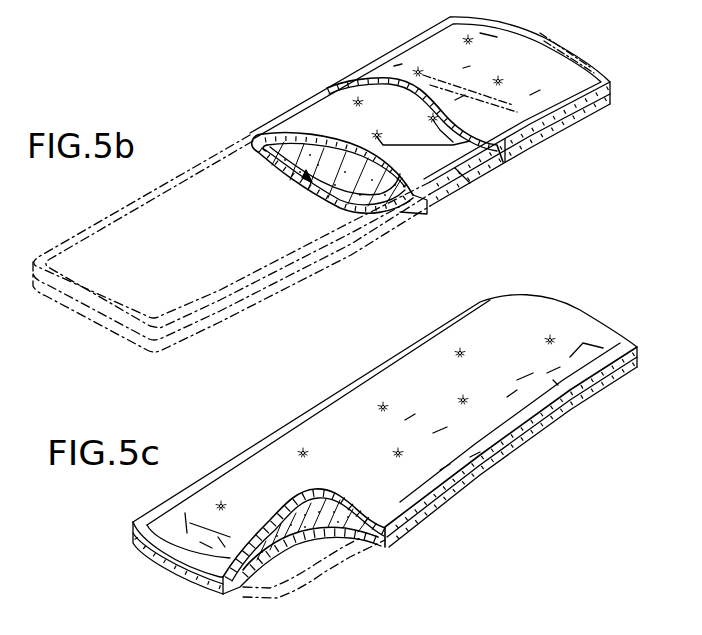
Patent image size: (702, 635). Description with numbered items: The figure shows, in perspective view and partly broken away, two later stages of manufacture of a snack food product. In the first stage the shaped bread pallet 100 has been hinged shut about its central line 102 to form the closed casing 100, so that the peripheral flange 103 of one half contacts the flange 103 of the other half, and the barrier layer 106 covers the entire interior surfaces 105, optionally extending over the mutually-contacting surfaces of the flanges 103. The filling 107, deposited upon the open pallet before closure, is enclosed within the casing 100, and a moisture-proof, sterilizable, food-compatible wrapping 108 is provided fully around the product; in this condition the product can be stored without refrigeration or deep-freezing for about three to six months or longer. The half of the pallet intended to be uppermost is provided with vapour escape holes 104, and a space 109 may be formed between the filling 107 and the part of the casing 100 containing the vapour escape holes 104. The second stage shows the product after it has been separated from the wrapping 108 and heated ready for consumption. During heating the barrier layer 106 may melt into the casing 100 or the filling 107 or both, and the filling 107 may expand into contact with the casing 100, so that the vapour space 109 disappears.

In FIG. 5b, the shaped bread pallet 100 is at (318, 86).
In FIG. 5c, the shaped bread pallet 100 is at (408, 341).
In FIG. 5b, the central line 102 is at (250, 140).
In FIG. 5b, the peripheral flange 103 is at (462, 175).
In FIG. 5b, the vapour escape holes 104 is at (473, 130).
In FIG. 5c, the vapour escape holes 104 is at (463, 350).
In FIG. 5b, the interior surfaces 105 is at (263, 137).
In FIG. 5b, the barrier layer 106 is at (363, 205).
In FIG. 5c, the barrier layer 106 is at (360, 542).
In FIG. 5b, the filling 107 is at (305, 196).
In FIG. 5c, the filling 107 is at (278, 540).
In FIG. 5b, the wrapping 108 is at (553, 33).
In FIG. 5b, the space 109 is at (340, 140).